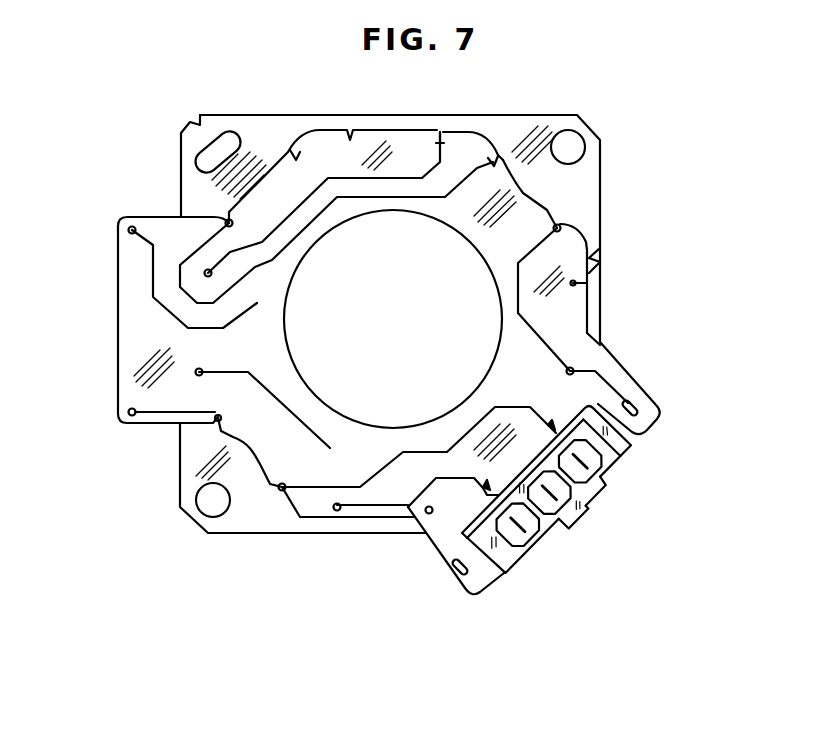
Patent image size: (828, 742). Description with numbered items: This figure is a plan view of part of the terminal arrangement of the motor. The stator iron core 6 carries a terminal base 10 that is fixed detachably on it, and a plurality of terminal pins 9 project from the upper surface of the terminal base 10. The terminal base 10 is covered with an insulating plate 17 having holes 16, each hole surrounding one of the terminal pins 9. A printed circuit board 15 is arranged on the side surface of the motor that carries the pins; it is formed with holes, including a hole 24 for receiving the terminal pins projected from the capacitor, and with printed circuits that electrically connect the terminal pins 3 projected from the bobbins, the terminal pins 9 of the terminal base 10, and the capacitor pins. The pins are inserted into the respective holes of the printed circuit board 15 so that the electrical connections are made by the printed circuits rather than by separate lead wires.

The stator iron core 6 is at (592, 212).
The printed circuit board 15 is at (130, 303).
The hole 24 is at (131, 226).
The terminal pins 3 is at (336, 512).
The terminal pins 9 is at (606, 492).
The terminal base 10 is at (518, 567).
The holes 16 is at (530, 530).
The insulating plate 17 is at (623, 450).